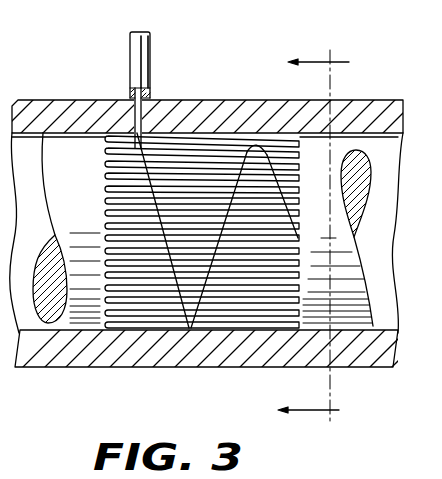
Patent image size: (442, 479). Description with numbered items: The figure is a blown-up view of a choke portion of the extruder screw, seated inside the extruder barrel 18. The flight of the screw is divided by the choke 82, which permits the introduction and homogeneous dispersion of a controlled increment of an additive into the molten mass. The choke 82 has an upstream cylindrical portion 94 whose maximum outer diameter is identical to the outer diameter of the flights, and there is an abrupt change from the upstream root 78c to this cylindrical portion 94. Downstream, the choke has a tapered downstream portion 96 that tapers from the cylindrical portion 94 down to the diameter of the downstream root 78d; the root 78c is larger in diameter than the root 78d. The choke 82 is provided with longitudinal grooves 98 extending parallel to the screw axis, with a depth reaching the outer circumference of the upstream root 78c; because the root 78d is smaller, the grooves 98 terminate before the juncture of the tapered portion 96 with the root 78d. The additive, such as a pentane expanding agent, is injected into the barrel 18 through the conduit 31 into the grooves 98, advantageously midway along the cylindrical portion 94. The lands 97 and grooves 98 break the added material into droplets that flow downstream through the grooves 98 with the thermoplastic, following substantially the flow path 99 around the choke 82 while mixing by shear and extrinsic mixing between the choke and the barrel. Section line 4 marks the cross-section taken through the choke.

The extruder barrel 18 is at (218, 363).
The conduit 31 is at (143, 53).
The choke 82 is at (192, 63).
The upstream root 78c is at (55, 153).
The downstream root 78d is at (371, 173).
The cylindrical portion 94 is at (123, 133).
The downstream portion 96 is at (233, 140).
The lands 97 is at (106, 164).
The longitudinal grooves 98 is at (106, 202).
The flow path 99 is at (268, 150).
The section line 4- 4 is at (321, 238).